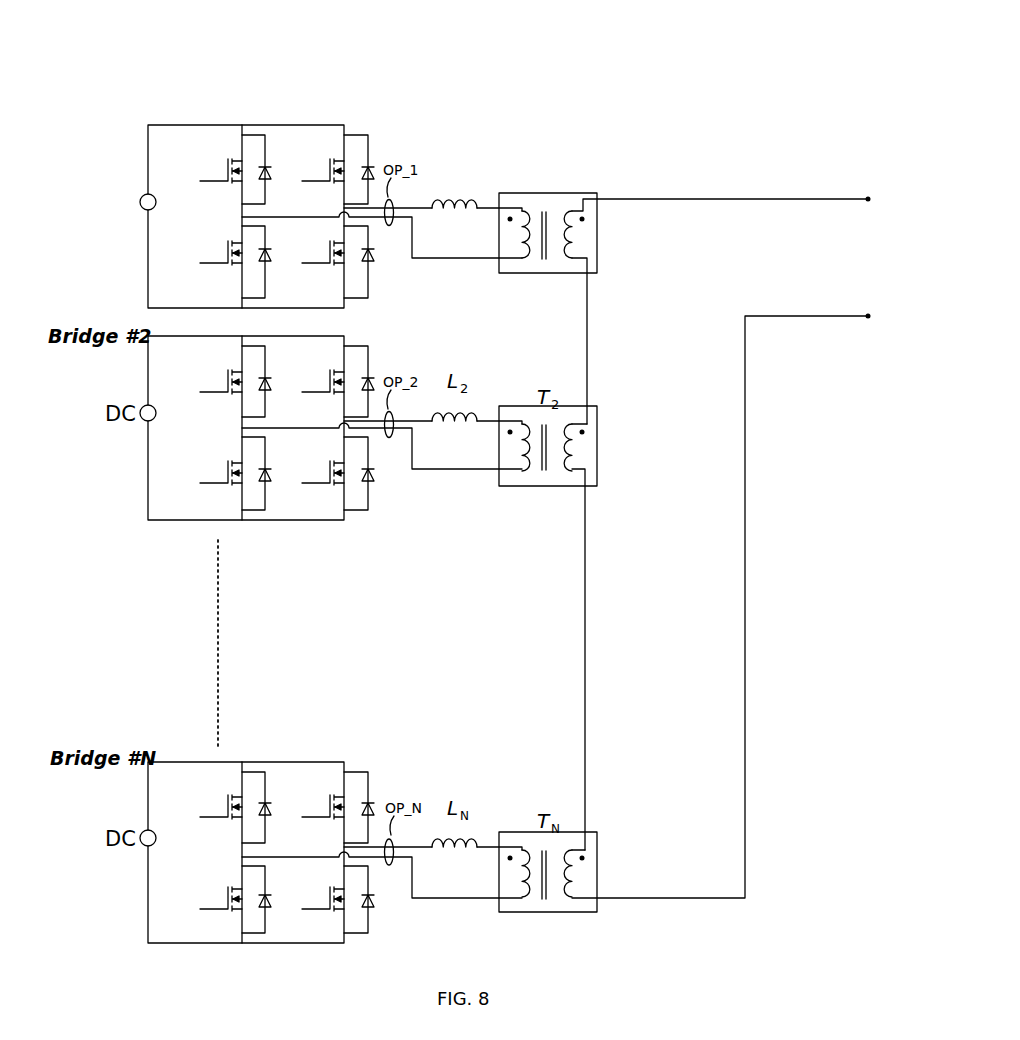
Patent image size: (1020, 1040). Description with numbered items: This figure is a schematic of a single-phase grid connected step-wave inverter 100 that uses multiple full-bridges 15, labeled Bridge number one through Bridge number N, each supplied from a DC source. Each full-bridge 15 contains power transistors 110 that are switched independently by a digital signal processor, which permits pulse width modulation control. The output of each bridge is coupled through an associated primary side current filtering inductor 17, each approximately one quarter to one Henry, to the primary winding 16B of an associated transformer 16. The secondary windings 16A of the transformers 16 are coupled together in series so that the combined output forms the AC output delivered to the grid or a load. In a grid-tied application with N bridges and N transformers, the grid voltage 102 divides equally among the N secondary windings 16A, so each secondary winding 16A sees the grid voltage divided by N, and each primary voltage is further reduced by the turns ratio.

The inverter 100 is at (479, 74).
The full-bridge 15 is at (205, 126).
The power transistor 110 is at (229, 174).
The inductor 17 is at (434, 192).
The transformer 16 is at (563, 193).
The primary winding 16B is at (522, 210).
The secondary winding 16A is at (573, 210).
The grid voltage 102 is at (828, 178).